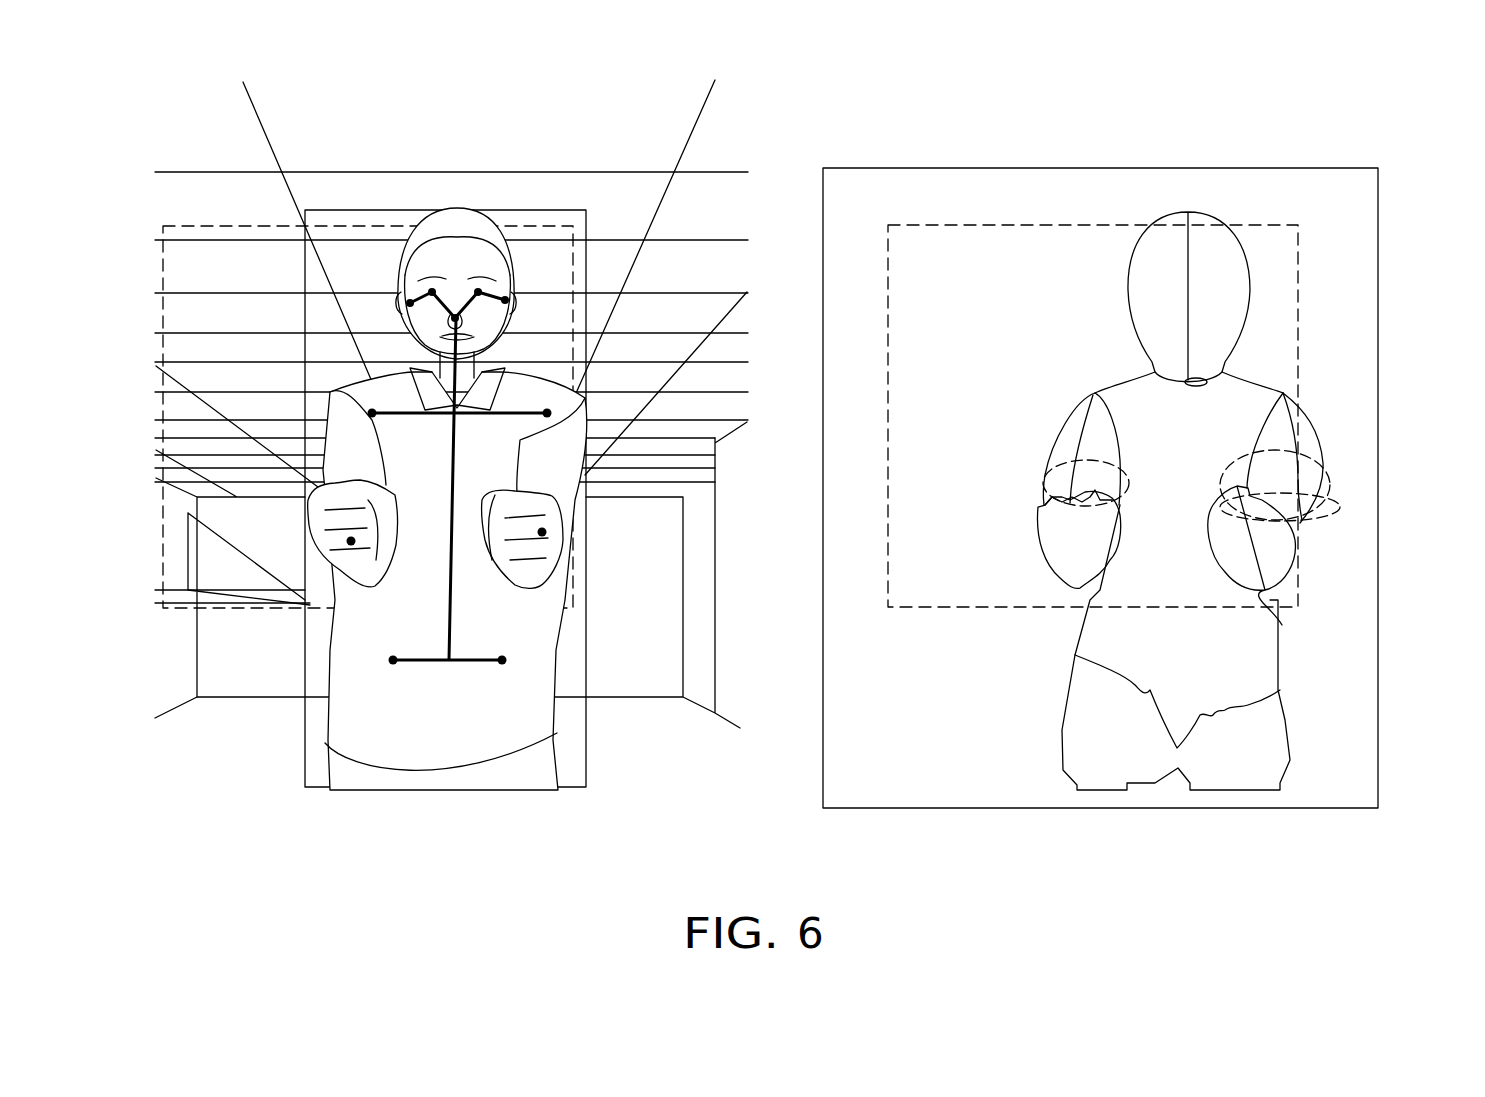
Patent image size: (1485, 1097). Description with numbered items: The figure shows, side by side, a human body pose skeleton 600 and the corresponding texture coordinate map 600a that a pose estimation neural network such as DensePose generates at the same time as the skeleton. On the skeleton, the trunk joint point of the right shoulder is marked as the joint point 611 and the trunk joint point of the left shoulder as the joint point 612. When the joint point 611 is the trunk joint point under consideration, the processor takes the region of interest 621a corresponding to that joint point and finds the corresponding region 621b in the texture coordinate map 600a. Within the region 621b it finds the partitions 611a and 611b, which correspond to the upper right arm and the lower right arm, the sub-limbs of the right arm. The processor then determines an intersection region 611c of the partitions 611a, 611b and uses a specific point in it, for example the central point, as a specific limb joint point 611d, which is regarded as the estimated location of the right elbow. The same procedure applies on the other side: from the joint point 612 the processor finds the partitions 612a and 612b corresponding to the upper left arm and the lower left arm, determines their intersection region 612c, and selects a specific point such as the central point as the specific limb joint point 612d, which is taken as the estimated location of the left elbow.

The human body pose skeleton 600 is at (406, 846).
The texture coordinate map 600a is at (1156, 844).
The joint point 611 is at (372, 413).
The joint point 612 is at (547, 413).
The partition 611a is at (1088, 415).
The partition 612a is at (1280, 427).
The partition 611b is at (1075, 540).
The partition 612b is at (1250, 553).
The intersection region 611c is at (1040, 483).
The intersection region 612c is at (1330, 482).
The specific limb joint point 611d is at (1045, 505).
The specific limb joint point 612d is at (1338, 507).
The region of interest 621a is at (163, 300).
The region 621b is at (888, 288).